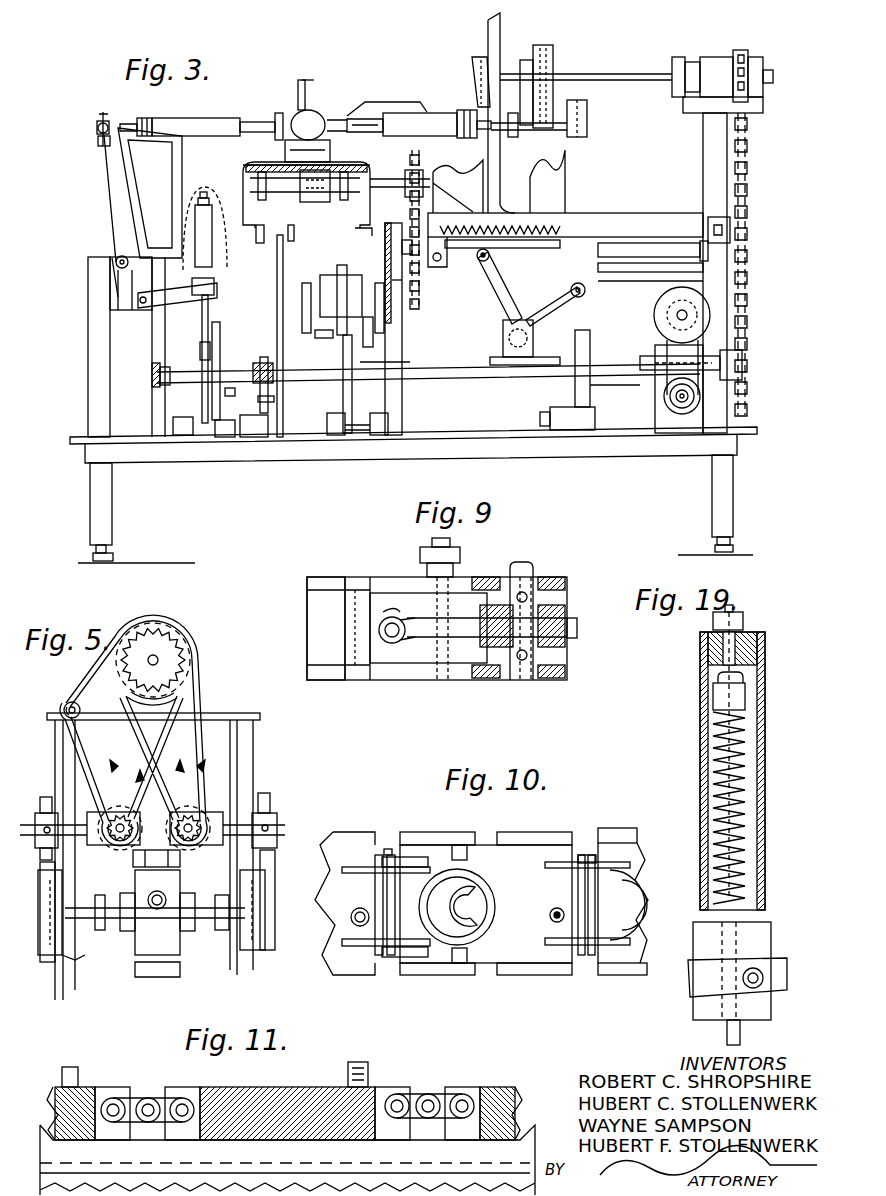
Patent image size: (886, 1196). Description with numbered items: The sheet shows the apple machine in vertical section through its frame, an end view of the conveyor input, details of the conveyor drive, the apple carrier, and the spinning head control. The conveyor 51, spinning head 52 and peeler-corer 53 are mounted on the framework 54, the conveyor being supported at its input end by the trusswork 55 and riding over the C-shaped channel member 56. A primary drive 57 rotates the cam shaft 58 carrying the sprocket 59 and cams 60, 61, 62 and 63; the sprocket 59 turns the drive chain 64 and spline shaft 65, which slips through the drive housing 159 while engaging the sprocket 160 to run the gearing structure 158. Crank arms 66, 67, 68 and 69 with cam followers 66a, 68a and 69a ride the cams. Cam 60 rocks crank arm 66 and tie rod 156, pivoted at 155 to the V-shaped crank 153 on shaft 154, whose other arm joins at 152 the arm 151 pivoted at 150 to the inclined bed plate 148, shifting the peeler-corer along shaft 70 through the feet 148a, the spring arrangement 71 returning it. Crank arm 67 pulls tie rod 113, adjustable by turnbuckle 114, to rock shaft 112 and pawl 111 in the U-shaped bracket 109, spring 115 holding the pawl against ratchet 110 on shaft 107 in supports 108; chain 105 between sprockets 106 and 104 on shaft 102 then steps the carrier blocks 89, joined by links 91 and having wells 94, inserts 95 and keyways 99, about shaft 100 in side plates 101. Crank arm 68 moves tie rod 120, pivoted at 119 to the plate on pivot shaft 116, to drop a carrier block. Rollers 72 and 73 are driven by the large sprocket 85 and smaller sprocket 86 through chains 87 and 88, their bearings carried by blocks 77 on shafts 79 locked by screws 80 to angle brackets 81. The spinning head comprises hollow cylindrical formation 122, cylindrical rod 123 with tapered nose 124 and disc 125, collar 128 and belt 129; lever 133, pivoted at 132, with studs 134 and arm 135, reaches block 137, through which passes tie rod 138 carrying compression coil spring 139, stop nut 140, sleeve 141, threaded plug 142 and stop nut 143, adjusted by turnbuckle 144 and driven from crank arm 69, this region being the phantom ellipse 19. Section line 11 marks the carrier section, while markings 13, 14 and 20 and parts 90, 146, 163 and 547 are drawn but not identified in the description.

In FIG. 10, the section line 11 is at (355, 955).
In FIG. 3, the section line 13 is at (748, 26).
In FIG. 3, the section line 14 is at (82, 95).
In FIG. 3, the phantom ellipse 19 is at (226, 275).
In FIG. 3, the section line 20 is at (320, 60).
In FIG. 3, the conveyor 51 is at (266, 167).
In FIG. 3, the spinning head 52 is at (215, 118).
In FIG. 3, the peeler-corer 53 is at (535, 29).
In FIG. 3, the framework 54 is at (95, 380).
In FIG. 5, the trusswork 55 is at (247, 740).
In FIG. 3, the C-shaped channel member 56 is at (362, 228).
In FIG. 5, the C-shaped channel member 56 is at (92, 958).
In FIG. 3, the primary drive 57 is at (664, 393).
In FIG. 3, the cam shaft 58 is at (445, 377).
In FIG. 5, the cam shaft 58 is at (152, 830).
In FIG. 3, the sprocket 59 is at (745, 354).
In FIG. 3, the cam 60 is at (655, 328).
In FIG. 3, the cam 61 is at (343, 358).
In FIG. 3, the cam 62 is at (265, 355).
In FIG. 3, the cam 63 is at (220, 322).
In FIG. 3, the drive chain 64 is at (750, 152).
In FIG. 3, the spline shaft 65 is at (597, 73).
In FIG. 3, the crank arm 66 is at (576, 389).
In FIG. 3, the cam follower 66a is at (615, 379).
In FIG. 3, the crank arm 67 is at (340, 415).
In FIG. 3, the crank arm 68 is at (241, 410).
In FIG. 3, the cam follower 68a is at (268, 452).
In FIG. 3, the crank arm 69 is at (228, 396).
In FIG. 3, the cam follower 69a is at (258, 407).
In FIG. 3, the shaft 70 is at (640, 256).
In FIG. 3, the spring arrangement 71 is at (473, 224).
In FIG. 5, the roller 72 is at (192, 848).
In FIG. 5, the roller 73 is at (110, 848).
In FIG. 5, the block 77 is at (275, 808).
In FIG. 5, the shaft 79 is at (275, 860).
In FIG. 5, the locking screw 80 is at (270, 823).
In FIG. 5, the angle bracket 81 is at (268, 950).
In FIG. 5, the large sprocket 85 is at (135, 728).
In FIG. 5, the smaller sprocket 86 is at (195, 660).
In FIG. 5, the chain 87 is at (200, 738).
In FIG. 5, the chain 88 is at (97, 680).
In FIG. 3, the carrier block 89 is at (330, 146).
In FIG. 5, the carrier block 89 is at (133, 865).
In FIG. 10, the carrier block 89 is at (508, 963).
In FIG. 11, the carrier block 89 is at (258, 1090).
In FIG. 3, the stud 90 is at (308, 82).
In FIG. 10, the stud 90 is at (555, 908).
In FIG. 11, the stud 90 is at (358, 1060).
In FIG. 10, the link 91 is at (390, 848).
In FIG. 11, the link 91 is at (146, 1098).
In FIG. 10, the well 94 is at (470, 892).
In FIG. 10, the apertured insert 95 is at (480, 938).
In FIG. 10, the keyway 99 is at (488, 832).
In FIG. 5, the shaft 100 is at (112, 920).
In FIG. 5, the side plate 101 is at (225, 935).
In FIG. 3, the shaft 102 is at (388, 178).
In FIG. 3, the sprocket 104 is at (414, 162).
In FIG. 3, the chain 105 is at (412, 205).
In FIG. 3, the sprocket 106 is at (410, 320).
In FIG. 3, the shaft 107 is at (324, 327).
In FIG. 9, the shaft 107 is at (525, 563).
In FIG. 3, the support 108 is at (305, 284).
In FIG. 3, the U-shaped bracket 109 is at (322, 275).
In FIG. 9, the U-shaped bracket 109 is at (327, 585).
In FIG. 3, the ratchet 110 is at (347, 294).
In FIG. 9, the ratchet 110 is at (567, 616).
In FIG. 9, the pawl 111 is at (423, 638).
In FIG. 9, the shaft 112 is at (440, 653).
In FIG. 3, the tie rod 113 is at (405, 358).
In FIG. 9, the tie rod 113 is at (420, 555).
In FIG. 3, the turnbuckle 114 is at (363, 330).
In FIG. 9, the spring 115 is at (398, 618).
In FIG. 3, the pivot shaft 116 is at (257, 239).
In FIG. 3, the pivot connection 119 is at (296, 237).
In FIG. 3, the tie rod 120 is at (277, 313).
In FIG. 3, the hollow cylindrical formation 122 is at (203, 136).
In FIG. 3, the cylindrical rod 123 is at (250, 122).
In FIG. 3, the tapered nose 124 is at (298, 90).
In FIG. 3, the disc-like formation 125 is at (108, 120).
In FIG. 3, the collar 128 is at (148, 118).
In FIG. 3, the belt 129 is at (145, 137).
In FIG. 3, the pivot 132 is at (114, 240).
In FIG. 3, the lever 133 is at (112, 193).
In FIG. 3, the stud 134 is at (100, 146).
In FIG. 19, the stud 134 is at (766, 978).
In FIG. 3, the arm 135 is at (143, 310).
In FIG. 19, the arm 135 is at (693, 998).
In FIG. 3, the block 137 is at (214, 285).
In FIG. 19, the block 137 is at (771, 930).
In FIG. 3, the tie rod 138 is at (202, 333).
In FIG. 19, the tie rod 138 is at (745, 1035).
In FIG. 19, the compression coil spring 139 is at (750, 745).
In FIG. 19, the stop nut 140 is at (745, 700).
In FIG. 3, the sleeve 141 is at (205, 225).
In FIG. 19, the sleeve 141 is at (765, 680).
In FIG. 19, the threaded plug 142 is at (765, 634).
In FIG. 19, the stop nut 143 is at (745, 620).
In FIG. 3, the turnbuckle 144 is at (200, 349).
In FIG. 3, the coupling 146 is at (279, 113).
In FIG. 3, the inclined bed plate 148 is at (585, 204).
In FIG. 3, the feet 148a is at (465, 214).
In FIG. 3, the pivot 150 is at (440, 268).
In FIG. 3, the arm 151 is at (470, 248).
In FIG. 3, the pivotal connection 152 is at (490, 258).
In FIG. 3, the V-shaped crank 153 is at (502, 305).
In FIG. 3, the shaft 154 is at (503, 340).
In FIG. 3, the pivotal connection 155 is at (578, 284).
In FIG. 3, the tie rod 156 is at (565, 300).
In FIG. 3, the gearing structure 158 is at (585, 47).
In FIG. 3, the drive housing 159 is at (708, 70).
In FIG. 3, the sprocket 160 is at (742, 55).
In FIG. 3, the cylinder 163 is at (422, 113).
In FIG. 3, the bracket 547 is at (176, 168).